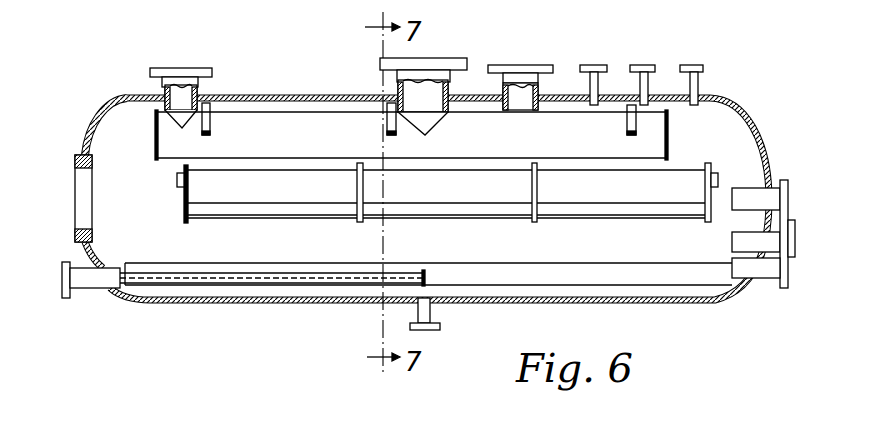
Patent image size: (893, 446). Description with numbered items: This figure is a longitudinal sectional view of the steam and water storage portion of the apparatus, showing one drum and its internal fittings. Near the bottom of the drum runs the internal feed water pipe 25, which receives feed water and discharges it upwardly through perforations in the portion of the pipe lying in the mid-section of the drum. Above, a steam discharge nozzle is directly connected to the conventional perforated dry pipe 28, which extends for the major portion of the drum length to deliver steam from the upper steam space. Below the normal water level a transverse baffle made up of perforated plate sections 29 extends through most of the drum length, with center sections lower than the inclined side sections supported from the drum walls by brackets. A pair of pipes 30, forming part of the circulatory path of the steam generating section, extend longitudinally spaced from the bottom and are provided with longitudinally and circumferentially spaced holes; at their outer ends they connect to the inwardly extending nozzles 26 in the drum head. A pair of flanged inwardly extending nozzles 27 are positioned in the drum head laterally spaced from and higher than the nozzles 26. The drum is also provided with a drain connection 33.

The internal feed water pipe 25 is at (392, 276).
The inwardly extending nozzles 26 is at (777, 278).
The inwardly extending nozzles 27 is at (776, 186).
The perforated dry pipe 28 is at (648, 133).
The perforated plate sections 29 is at (587, 190).
The pipes 30 is at (541, 263).
The drain connection 33 is at (430, 313).